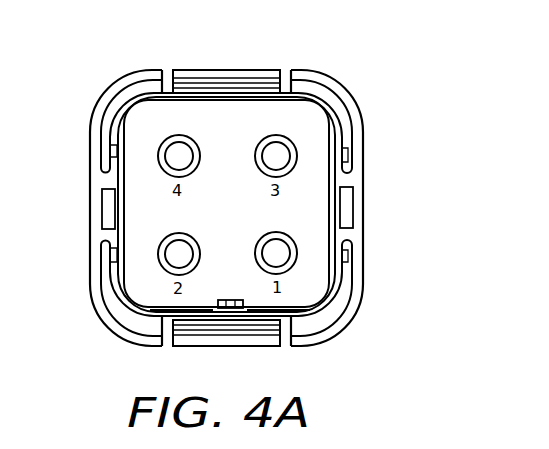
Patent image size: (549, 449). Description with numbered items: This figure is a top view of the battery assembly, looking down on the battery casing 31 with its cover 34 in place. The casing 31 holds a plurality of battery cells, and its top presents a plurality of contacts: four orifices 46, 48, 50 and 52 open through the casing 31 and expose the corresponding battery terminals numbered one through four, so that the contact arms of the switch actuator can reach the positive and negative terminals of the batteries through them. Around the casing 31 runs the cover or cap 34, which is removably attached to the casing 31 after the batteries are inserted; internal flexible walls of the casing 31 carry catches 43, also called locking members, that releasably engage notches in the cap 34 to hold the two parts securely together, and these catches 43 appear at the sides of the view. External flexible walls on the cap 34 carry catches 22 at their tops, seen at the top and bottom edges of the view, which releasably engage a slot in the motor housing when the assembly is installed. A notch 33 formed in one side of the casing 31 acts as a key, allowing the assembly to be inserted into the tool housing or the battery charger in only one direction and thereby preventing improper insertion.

The catches 22 is at (242, 74).
The battery casing 31 is at (318, 94).
The notch 33 is at (227, 298).
The cover 34 is at (88, 115).
The catches 43 is at (107, 203).
The orifice 46 is at (278, 250).
The orifice 48 is at (182, 246).
The orifice 50 is at (270, 164).
The orifice 52 is at (186, 152).